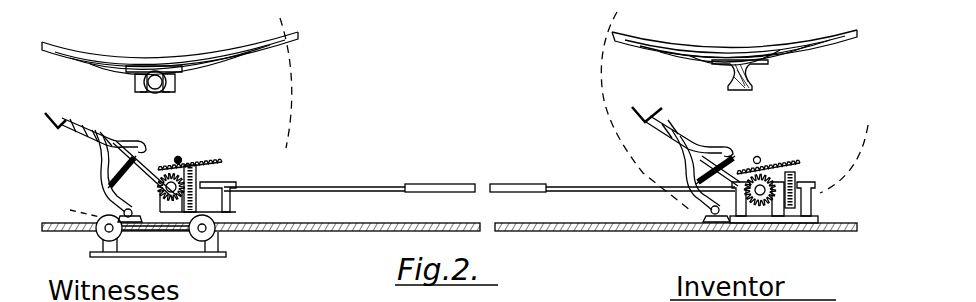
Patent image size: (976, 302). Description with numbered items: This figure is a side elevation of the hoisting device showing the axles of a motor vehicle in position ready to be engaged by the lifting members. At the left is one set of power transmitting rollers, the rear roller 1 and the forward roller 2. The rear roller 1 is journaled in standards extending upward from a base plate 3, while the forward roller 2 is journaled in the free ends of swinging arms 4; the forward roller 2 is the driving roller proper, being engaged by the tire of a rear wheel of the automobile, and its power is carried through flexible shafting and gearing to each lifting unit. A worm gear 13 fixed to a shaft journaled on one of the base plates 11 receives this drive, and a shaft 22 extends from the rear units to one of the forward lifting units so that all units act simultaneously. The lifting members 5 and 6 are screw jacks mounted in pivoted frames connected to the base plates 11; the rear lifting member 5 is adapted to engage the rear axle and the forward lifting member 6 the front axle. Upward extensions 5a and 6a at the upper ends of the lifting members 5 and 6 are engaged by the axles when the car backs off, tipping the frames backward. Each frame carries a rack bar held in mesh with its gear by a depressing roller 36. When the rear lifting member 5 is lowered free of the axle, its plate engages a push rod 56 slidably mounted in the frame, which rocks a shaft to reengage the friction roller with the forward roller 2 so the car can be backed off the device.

The rear roller 1 is at (100, 237).
The forward roller 2 is at (200, 238).
The base plate 3 is at (228, 254).
The swinging arms 4 is at (155, 228).
The lifting member 5 is at (76, 118).
The upward extension 5a is at (52, 112).
The lifting member 6 is at (668, 116).
The upward extension 6a is at (636, 106).
The base plate 11 is at (795, 212).
The worm gear 13 is at (208, 212).
The shaft 22 is at (318, 184).
The depressing roller 36 is at (181, 159).
The push rod 56 is at (98, 138).